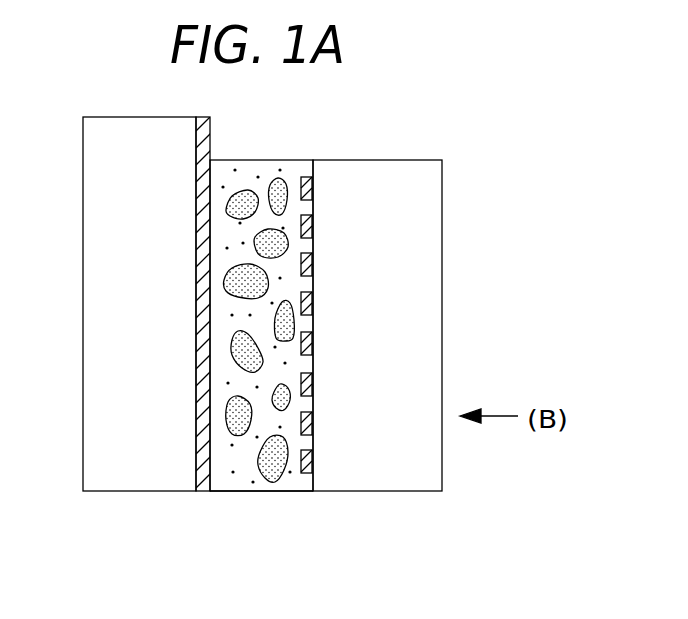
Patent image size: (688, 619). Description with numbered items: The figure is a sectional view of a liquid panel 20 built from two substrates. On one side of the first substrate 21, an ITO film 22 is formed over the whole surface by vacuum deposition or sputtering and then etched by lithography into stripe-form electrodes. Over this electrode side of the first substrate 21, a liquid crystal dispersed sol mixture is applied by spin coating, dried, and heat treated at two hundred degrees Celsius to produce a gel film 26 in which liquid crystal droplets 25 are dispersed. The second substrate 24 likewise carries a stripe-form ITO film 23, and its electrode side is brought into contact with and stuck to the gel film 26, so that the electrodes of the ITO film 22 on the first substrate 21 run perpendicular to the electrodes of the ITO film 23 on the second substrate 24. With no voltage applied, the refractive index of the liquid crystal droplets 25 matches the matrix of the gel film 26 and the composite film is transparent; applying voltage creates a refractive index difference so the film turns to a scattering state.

The liquid panel 20 is at (87, 101).
The first substrate 21 is at (90, 208).
The ITO film 22 is at (212, 124).
The ITO film 23 is at (313, 228).
The second substrate 24 is at (428, 242).
The liquid crystal droplets 25 is at (242, 192).
The gel film 26 is at (225, 483).